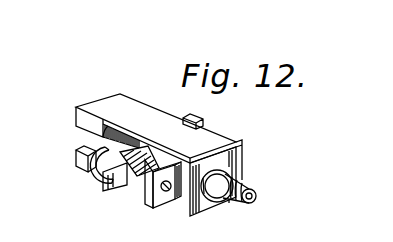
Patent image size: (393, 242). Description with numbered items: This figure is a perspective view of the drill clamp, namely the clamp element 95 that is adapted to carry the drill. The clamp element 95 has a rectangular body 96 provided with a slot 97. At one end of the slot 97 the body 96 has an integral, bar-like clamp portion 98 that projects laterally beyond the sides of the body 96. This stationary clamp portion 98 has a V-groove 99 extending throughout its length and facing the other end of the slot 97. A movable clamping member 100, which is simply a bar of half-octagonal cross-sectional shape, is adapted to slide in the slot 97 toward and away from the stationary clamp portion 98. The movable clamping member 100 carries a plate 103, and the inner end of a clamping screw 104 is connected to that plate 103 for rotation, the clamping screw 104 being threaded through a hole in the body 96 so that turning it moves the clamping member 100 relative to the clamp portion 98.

The clamp element 95 is at (199, 216).
The rectangular body 96 is at (207, 140).
The slot 97 is at (147, 158).
The clamp portion 98 is at (93, 175).
The V-groove 99 is at (113, 183).
The movable clamping member 100 is at (148, 193).
The plate 103 is at (162, 198).
The clamping screw 104 is at (257, 195).